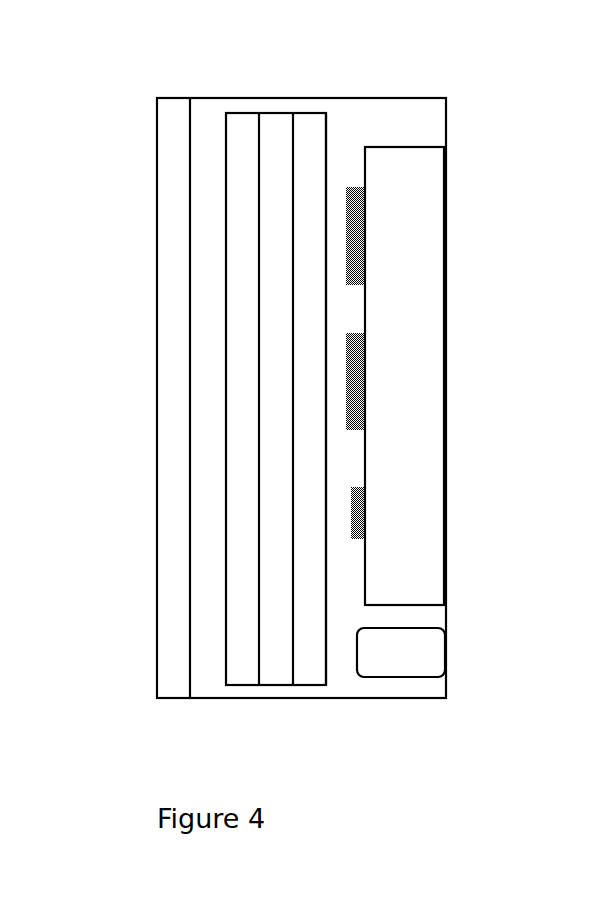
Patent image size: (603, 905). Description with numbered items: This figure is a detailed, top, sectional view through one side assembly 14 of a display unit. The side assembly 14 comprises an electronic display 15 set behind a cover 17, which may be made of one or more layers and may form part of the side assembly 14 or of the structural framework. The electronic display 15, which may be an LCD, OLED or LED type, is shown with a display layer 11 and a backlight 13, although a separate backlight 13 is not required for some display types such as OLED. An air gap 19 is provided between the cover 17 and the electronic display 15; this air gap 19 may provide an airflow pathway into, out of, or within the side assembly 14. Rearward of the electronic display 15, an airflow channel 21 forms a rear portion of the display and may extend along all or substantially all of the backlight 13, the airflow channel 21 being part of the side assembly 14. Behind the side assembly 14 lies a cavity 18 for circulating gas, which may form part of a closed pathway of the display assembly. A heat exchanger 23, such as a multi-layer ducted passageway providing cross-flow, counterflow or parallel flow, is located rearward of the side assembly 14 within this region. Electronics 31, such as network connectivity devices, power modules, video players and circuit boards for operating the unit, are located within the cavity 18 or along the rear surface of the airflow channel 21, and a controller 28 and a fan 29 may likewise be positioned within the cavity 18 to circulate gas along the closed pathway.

The display layer 11 is at (238, 237).
The backlight 13 is at (275, 310).
The side assembly 14 is at (153, 76).
The electronic display 15 is at (229, 693).
The cover 17 is at (170, 285).
The cavity 18 is at (405, 120).
The air gap 19 is at (204, 588).
The airflow channel 21 is at (313, 425).
The heat exchanger 23 is at (413, 308).
The controller 28 is at (366, 226).
The fan 29 is at (420, 657).
The electronics 31 is at (366, 378).